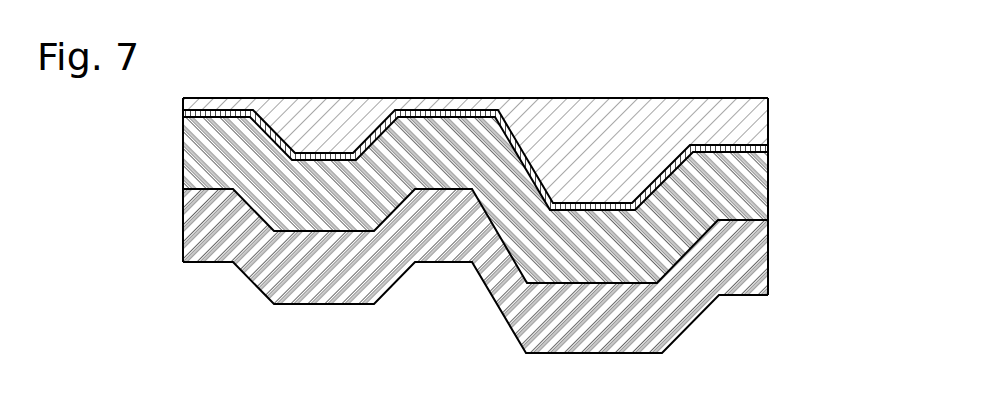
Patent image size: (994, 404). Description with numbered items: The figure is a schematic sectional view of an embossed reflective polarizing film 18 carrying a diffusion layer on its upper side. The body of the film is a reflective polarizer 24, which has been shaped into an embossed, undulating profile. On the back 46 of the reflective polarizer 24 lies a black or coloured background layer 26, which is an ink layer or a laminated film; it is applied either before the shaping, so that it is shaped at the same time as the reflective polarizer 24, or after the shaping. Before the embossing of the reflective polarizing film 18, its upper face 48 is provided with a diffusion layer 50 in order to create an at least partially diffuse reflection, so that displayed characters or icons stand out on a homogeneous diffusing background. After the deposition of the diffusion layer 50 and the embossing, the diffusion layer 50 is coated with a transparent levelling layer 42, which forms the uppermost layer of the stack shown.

The reflective polarizing film 18 is at (132, 118).
The reflective polarizer 24 is at (735, 189).
The black or coloured background layer 26 is at (735, 266).
The transparent levelling layer 42 is at (768, 107).
The back of reflective polarizer 46 is at (308, 231).
The upper face of reflective polarizing film 48 is at (578, 205).
The diffusion layer 50 is at (440, 110).